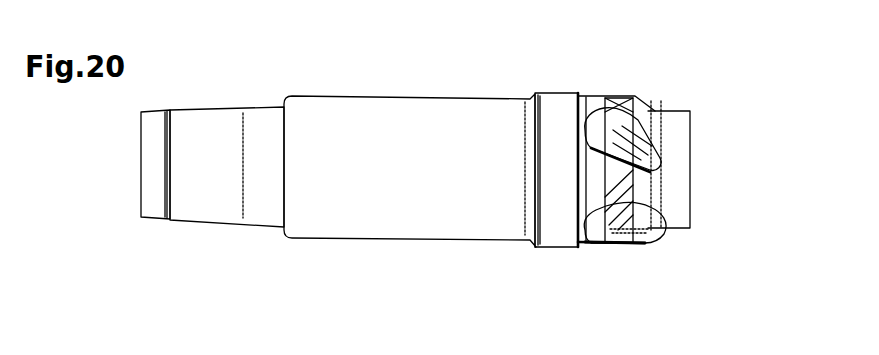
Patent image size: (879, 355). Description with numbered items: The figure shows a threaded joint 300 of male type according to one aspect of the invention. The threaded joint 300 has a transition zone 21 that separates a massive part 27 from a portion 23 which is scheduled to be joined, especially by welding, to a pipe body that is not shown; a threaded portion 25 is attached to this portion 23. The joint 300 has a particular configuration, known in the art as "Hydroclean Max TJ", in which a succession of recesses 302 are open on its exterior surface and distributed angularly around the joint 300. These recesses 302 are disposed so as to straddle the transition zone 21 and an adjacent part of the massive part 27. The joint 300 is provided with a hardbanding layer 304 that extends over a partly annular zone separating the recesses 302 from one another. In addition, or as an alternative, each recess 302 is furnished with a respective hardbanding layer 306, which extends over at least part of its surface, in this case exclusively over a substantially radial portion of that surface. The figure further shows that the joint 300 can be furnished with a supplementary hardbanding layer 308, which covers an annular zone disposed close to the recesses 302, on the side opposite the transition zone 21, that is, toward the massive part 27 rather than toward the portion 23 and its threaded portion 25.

The threaded joint 300 is at (693, 65).
The transition zone 21 is at (652, 108).
The portion scheduled to be joined 23 is at (690, 202).
The threaded portion 25 is at (218, 226).
The massive part 27 is at (412, 96).
The recesses 302 is at (623, 122).
The hardbanding layer 304 is at (667, 228).
The hardbanding layer 306 is at (641, 139).
The supplementary hardbanding layer 308 is at (557, 234).